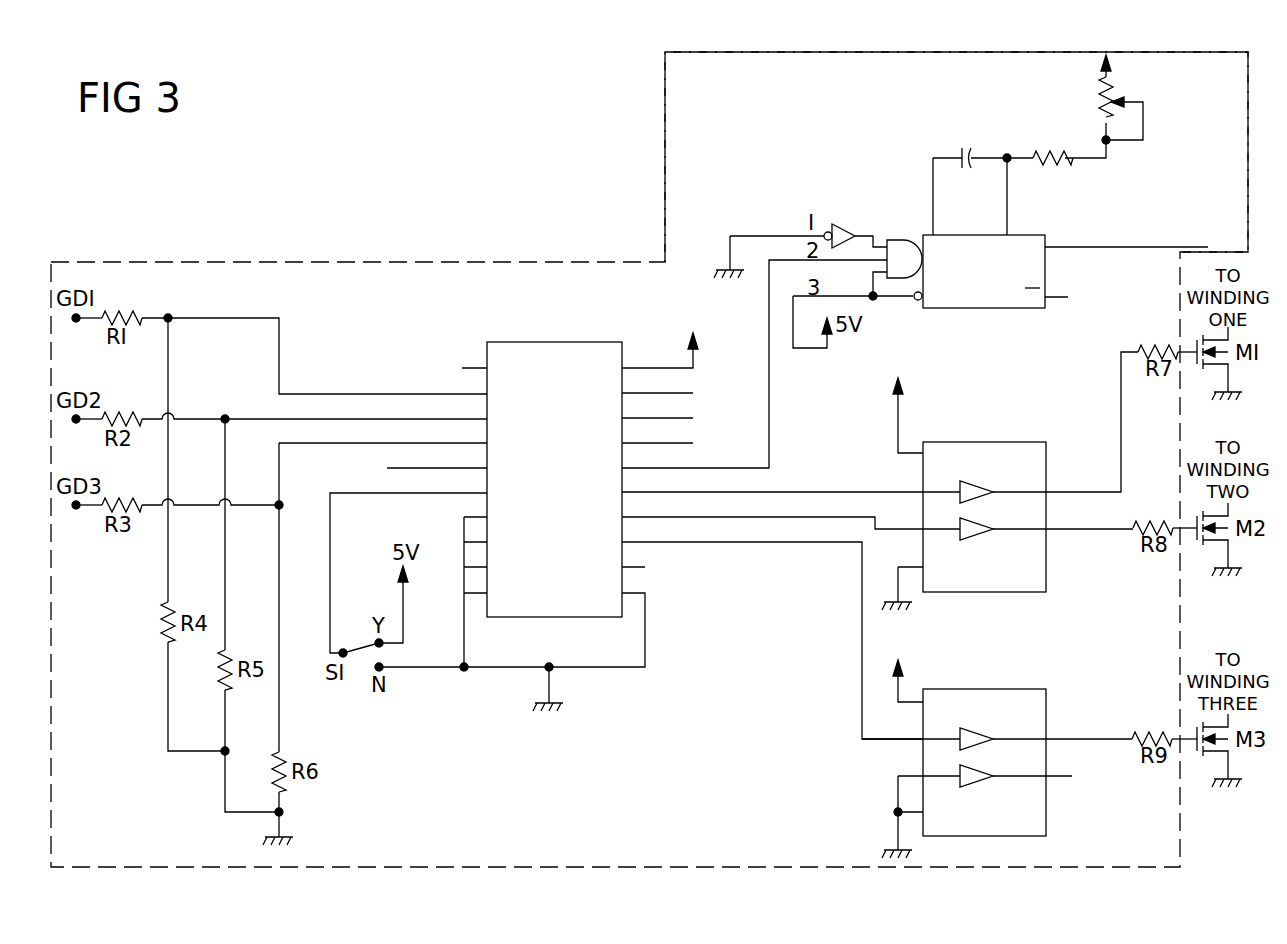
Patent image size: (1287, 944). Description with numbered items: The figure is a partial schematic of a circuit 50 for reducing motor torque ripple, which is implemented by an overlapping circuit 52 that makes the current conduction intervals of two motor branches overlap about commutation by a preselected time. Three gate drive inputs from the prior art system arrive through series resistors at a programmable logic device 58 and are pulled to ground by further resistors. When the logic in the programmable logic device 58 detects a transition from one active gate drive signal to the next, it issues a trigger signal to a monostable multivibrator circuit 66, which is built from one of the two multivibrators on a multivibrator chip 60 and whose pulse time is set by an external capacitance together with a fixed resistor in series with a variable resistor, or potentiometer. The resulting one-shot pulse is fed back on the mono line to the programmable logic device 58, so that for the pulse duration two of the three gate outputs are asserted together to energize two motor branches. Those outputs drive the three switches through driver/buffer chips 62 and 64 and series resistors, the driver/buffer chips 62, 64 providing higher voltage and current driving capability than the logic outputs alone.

The circuit for reducing motor torque ripple 50 is at (456, 214).
The overlapping circuit 52 is at (665, 143).
The programmable logic device 58 is at (542, 342).
The multivibrator chip 60 is at (1000, 308).
The driver/buffer chip 62 is at (1030, 592).
The driver/buffer chip 64 is at (1040, 689).
The monostable multivibrator circuit 66 is at (1117, 212).